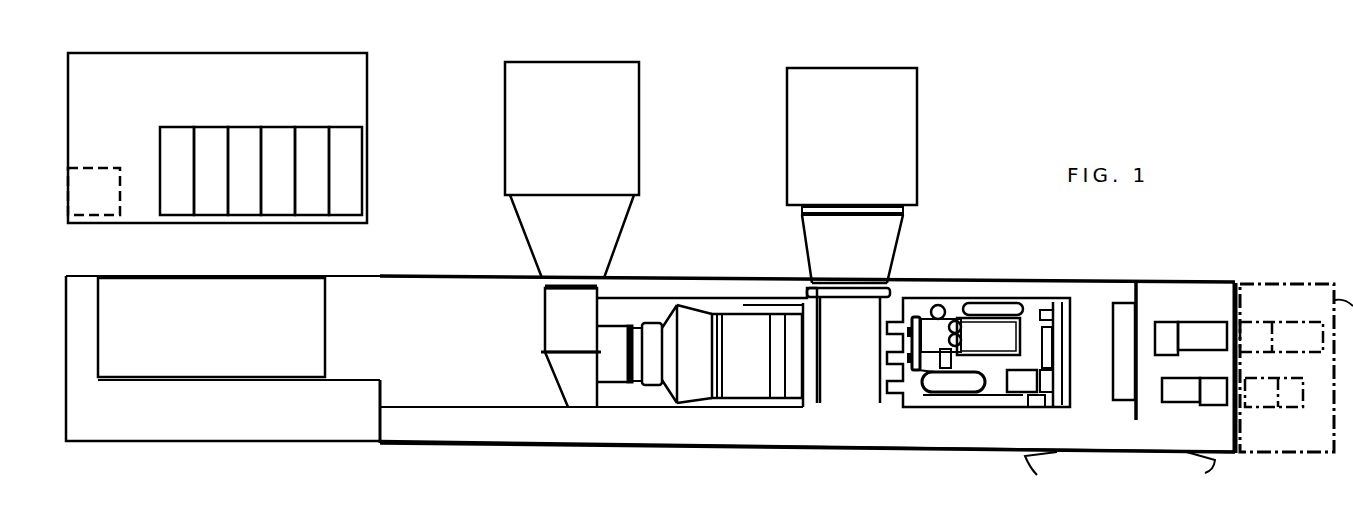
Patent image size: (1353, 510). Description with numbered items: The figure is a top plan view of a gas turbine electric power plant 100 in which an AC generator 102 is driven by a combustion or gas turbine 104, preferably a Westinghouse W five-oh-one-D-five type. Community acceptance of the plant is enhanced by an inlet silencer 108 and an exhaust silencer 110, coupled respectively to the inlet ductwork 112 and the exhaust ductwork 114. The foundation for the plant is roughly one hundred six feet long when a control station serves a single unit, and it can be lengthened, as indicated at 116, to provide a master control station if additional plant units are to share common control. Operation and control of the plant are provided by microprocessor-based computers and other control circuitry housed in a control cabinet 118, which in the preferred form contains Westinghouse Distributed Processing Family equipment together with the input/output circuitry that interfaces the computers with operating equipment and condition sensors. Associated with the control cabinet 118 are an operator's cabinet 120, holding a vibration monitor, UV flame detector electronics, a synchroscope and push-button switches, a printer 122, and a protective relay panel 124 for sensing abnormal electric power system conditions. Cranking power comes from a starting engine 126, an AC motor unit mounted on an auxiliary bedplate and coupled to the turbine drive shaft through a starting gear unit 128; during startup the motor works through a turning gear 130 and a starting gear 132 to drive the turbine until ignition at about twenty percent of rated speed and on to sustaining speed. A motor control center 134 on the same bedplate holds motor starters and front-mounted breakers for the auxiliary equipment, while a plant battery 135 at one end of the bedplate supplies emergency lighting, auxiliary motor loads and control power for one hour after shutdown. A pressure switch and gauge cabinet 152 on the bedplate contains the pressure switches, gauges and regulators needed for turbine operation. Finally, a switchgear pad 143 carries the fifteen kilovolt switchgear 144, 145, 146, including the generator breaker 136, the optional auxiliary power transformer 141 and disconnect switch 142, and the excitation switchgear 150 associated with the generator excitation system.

The gas turbine electric power plant 100 is at (857, 480).
The AC generator 102 is at (248, 367).
The gas turbine 104 is at (740, 305).
The inlet silencer 108 is at (612, 62).
The exhaust silencer 110 is at (897, 68).
The inlet ductwork 112 is at (623, 228).
The exhaust ductwork 114 is at (903, 233).
The foundation length increase 116 is at (1300, 283).
The control cabinet 118 is at (1203, 322).
The operator's cabinet 120 is at (1212, 405).
The printer 122 is at (1180, 402).
The protective relay panel 124 is at (1167, 322).
The starting engine 126 is at (985, 327).
The starting gear unit 128 is at (913, 318).
The turning gear 130 is at (933, 385).
The starting gear 132 is at (930, 366).
The motor control center 134 is at (1003, 400).
The plant battery 135 is at (1120, 282).
The generator breaker 136 is at (198, 127).
The auxiliary power transformer 141 is at (160, 127).
The disconnect switch 142 is at (88, 168).
The switchgear pad 143 is at (276, 53).
The 15 KV switchgear 144 is at (242, 127).
The 15 KV switchgear 145 is at (277, 127).
The 15 KV switchgear 146 is at (315, 127).
The excitation switchgear 150 is at (352, 127).
The pressure switch and gauge cabinet 152 is at (1065, 406).